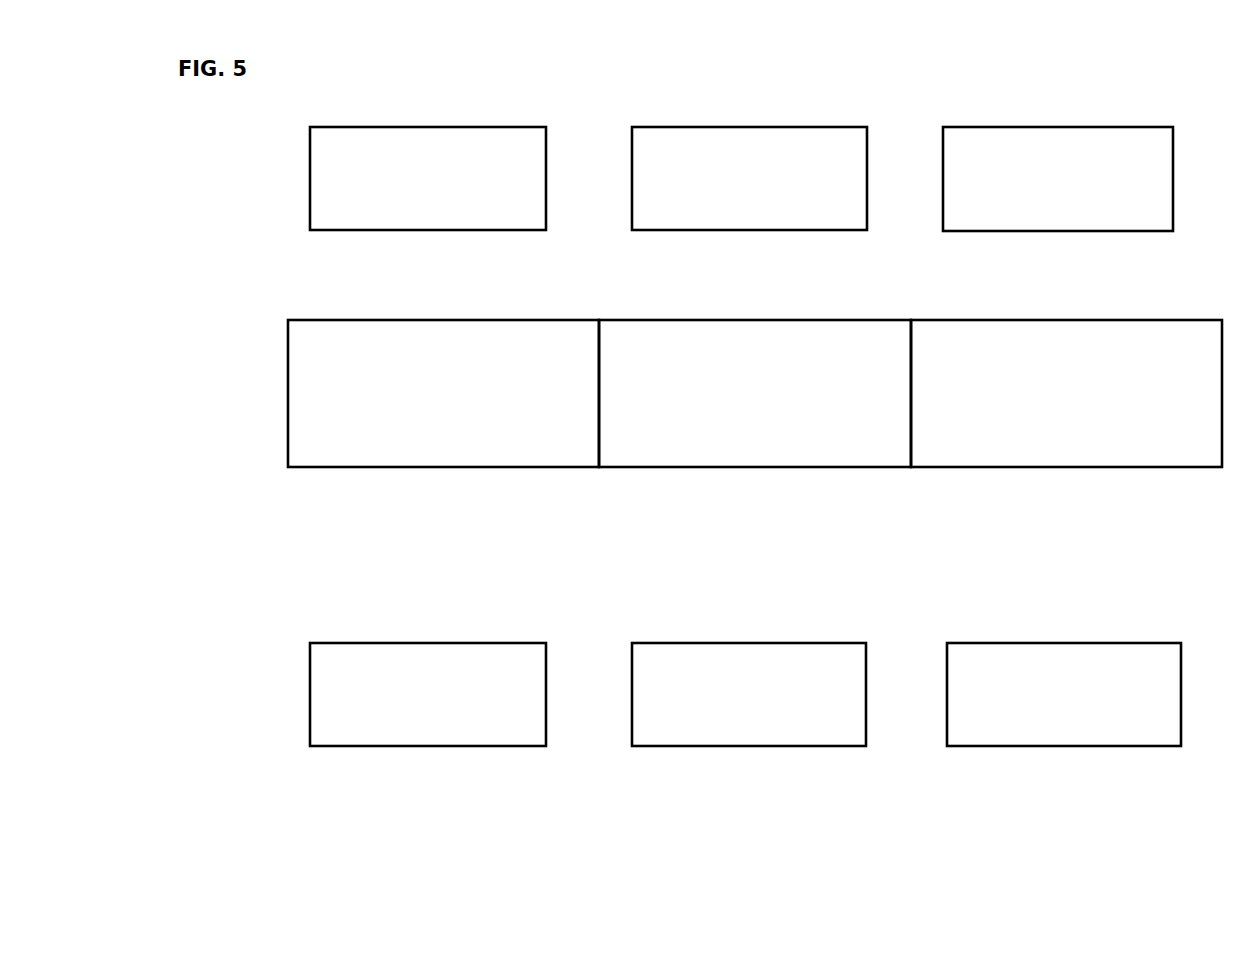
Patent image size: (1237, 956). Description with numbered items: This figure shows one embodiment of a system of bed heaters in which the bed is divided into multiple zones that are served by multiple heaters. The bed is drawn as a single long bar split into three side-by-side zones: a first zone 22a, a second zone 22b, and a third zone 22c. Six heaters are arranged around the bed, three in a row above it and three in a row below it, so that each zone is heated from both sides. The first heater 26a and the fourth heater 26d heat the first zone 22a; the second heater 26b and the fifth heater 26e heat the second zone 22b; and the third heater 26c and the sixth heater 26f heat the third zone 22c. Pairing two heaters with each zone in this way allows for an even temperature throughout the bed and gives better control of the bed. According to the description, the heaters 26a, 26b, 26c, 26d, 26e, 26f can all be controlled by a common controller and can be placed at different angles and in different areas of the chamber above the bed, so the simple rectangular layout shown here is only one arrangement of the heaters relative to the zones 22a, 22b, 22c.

The first zone 22a is at (406, 467).
The second zone 22b is at (710, 467).
The third zone 22c is at (1077, 467).
The first heater 26a is at (427, 128).
The second heater 26b is at (740, 127).
The third heater 26c is at (1043, 128).
The fourth heater 26d is at (405, 746).
The fifth heater 26e is at (738, 746).
The sixth heater 26f is at (1047, 746).